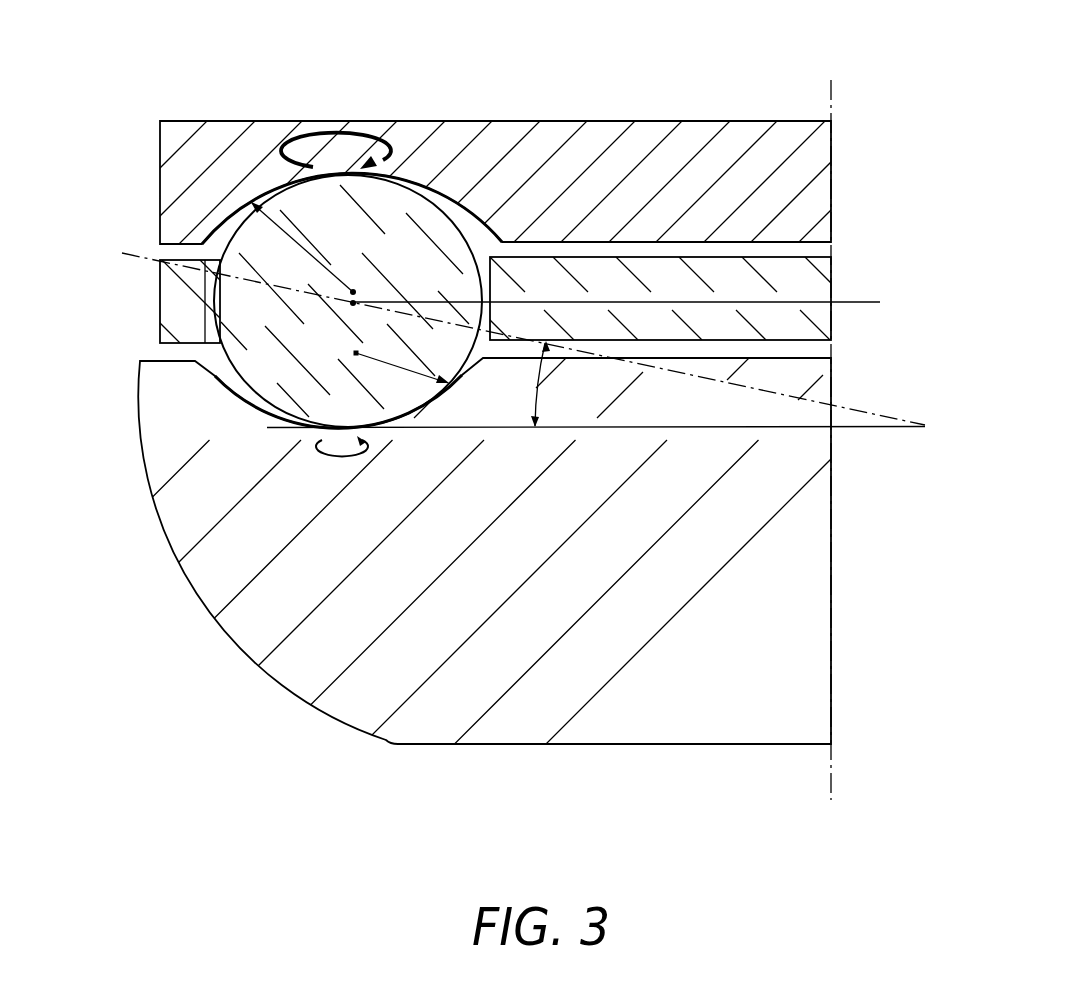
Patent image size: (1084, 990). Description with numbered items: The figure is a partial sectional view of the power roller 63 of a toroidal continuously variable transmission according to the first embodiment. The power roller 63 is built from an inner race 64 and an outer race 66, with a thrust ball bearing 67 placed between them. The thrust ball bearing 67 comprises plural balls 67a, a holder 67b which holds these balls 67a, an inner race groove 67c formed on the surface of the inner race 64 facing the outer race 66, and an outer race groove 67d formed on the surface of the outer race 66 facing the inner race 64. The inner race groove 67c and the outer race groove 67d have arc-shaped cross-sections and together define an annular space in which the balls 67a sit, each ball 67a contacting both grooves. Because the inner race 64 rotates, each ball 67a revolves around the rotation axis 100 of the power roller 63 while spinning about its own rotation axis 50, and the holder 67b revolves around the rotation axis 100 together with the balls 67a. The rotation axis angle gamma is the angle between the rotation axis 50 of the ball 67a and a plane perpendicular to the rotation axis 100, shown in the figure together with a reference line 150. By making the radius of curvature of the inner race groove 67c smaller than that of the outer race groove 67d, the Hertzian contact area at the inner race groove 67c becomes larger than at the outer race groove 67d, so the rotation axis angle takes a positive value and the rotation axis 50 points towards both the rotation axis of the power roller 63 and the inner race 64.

The rotation axis 50 is at (131, 251).
The power roller 63 is at (688, 71).
The inner race 64 is at (425, 566).
The outer race 66 is at (481, 162).
The thrust ball bearing 67 is at (454, 304).
The ball 67a is at (400, 397).
The holder 67b is at (664, 317).
The inner race groove 67c is at (262, 390).
The outer race groove 67d is at (460, 214).
The rotation axis of the power roller 100 is at (833, 90).
The radial center line 150 is at (860, 301).